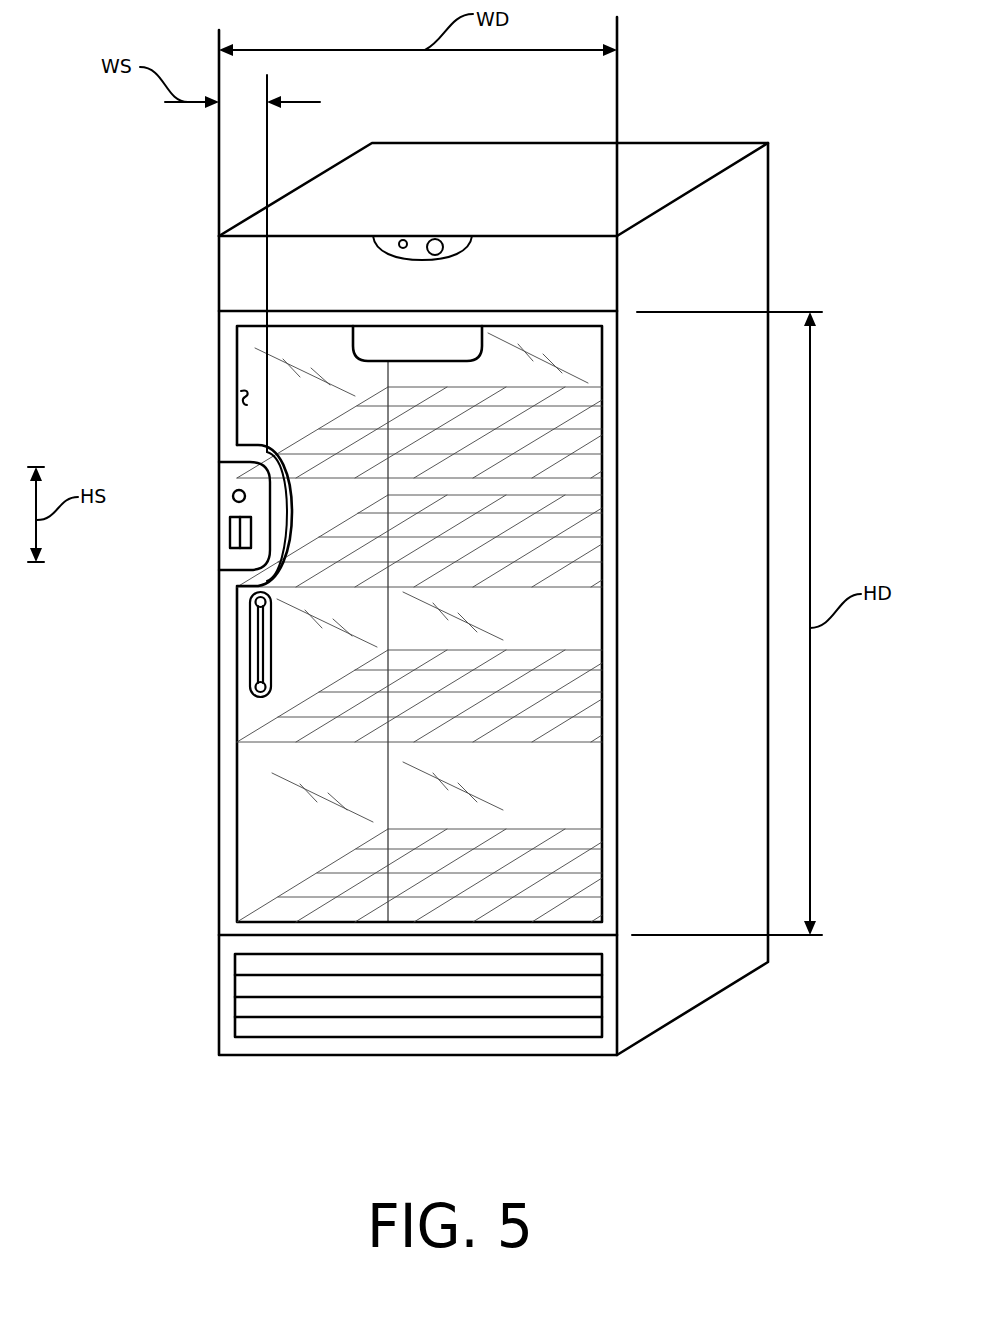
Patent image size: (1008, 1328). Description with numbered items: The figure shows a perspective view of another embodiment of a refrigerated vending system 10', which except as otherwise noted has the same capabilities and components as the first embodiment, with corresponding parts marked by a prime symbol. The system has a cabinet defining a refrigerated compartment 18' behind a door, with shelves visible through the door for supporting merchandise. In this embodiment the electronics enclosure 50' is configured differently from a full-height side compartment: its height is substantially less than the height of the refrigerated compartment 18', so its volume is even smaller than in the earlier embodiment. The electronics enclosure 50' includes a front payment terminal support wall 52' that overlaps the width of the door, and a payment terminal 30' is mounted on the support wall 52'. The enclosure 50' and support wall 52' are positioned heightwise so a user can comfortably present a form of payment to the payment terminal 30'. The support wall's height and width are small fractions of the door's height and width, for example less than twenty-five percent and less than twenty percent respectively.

The refrigerated vending system 10' is at (533, 576).
The refrigerated compartment 18' is at (366, 624).
The payment terminal 30' is at (212, 519).
The electronics enclosure 50' is at (477, 497).
The front payment terminal support wall 52' is at (205, 516).